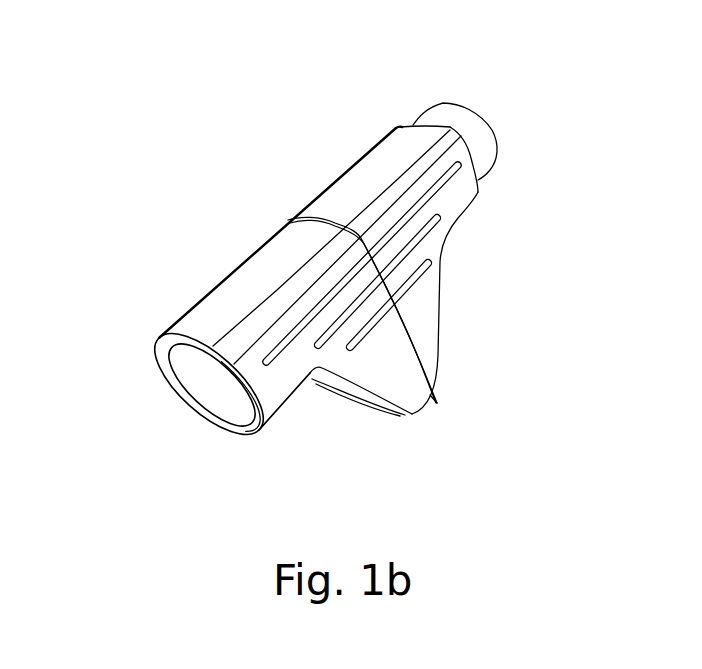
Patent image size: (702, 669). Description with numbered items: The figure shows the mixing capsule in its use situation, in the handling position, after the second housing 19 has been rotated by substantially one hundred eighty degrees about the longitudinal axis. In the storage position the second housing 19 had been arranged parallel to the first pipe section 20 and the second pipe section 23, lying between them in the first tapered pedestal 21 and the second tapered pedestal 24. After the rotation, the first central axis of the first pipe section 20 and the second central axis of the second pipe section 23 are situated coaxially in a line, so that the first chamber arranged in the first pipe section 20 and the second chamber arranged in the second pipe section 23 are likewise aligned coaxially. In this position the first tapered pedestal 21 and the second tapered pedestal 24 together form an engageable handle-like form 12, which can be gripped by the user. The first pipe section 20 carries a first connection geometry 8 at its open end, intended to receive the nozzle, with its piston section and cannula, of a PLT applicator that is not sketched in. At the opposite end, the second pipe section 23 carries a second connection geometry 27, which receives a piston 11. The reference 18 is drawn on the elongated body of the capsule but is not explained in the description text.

The first connection geometry 8 is at (231, 427).
The piston 11 is at (466, 121).
The engageable handle-like form 12 is at (437, 404).
The tubular handle portion 18 is at (250, 292).
The second housing 19 is at (328, 198).
The first pipe section 20 is at (172, 389).
The first tapered pedestal 21 is at (389, 416).
The second pipe section 23 is at (419, 122).
The second tapered pedestal 24 is at (440, 320).
The second connection geometry 27 is at (410, 125).